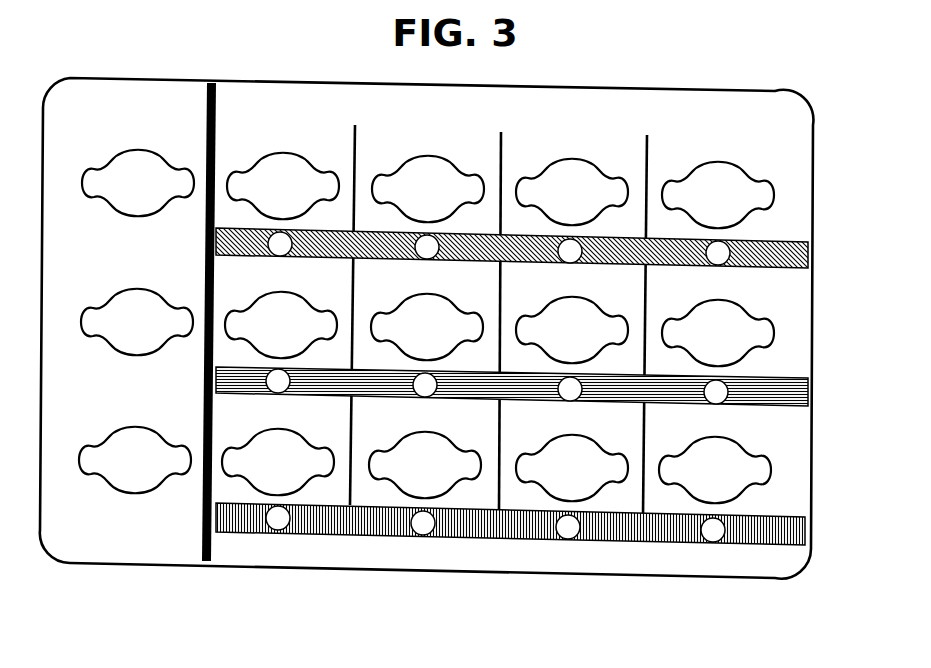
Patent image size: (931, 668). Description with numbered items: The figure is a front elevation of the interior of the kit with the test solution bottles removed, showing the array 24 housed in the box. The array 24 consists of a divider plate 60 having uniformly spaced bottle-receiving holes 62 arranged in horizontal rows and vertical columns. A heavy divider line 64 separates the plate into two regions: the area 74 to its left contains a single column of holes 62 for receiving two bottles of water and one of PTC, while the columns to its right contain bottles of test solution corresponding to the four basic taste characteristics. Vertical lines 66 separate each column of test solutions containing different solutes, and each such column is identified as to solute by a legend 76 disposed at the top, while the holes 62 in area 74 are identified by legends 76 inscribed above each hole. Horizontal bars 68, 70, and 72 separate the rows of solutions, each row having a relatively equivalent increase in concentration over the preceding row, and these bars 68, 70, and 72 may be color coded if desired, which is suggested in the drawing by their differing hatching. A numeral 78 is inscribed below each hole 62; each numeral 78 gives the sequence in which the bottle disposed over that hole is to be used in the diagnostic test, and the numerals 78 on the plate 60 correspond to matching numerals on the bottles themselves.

The array 24 is at (742, 87).
The divider plate 60 is at (771, 95).
The bottle-receiving holes 62 is at (129, 194).
The divider line 64 is at (215, 90).
The vertical lines 66 is at (356, 125).
The horizontal bar 68 is at (775, 245).
The horizontal bar 70 is at (772, 383).
The horizontal bar 72 is at (766, 518).
The area 74 is at (87, 90).
The legend 76 is at (162, 128).
The numeral 78 is at (130, 232).